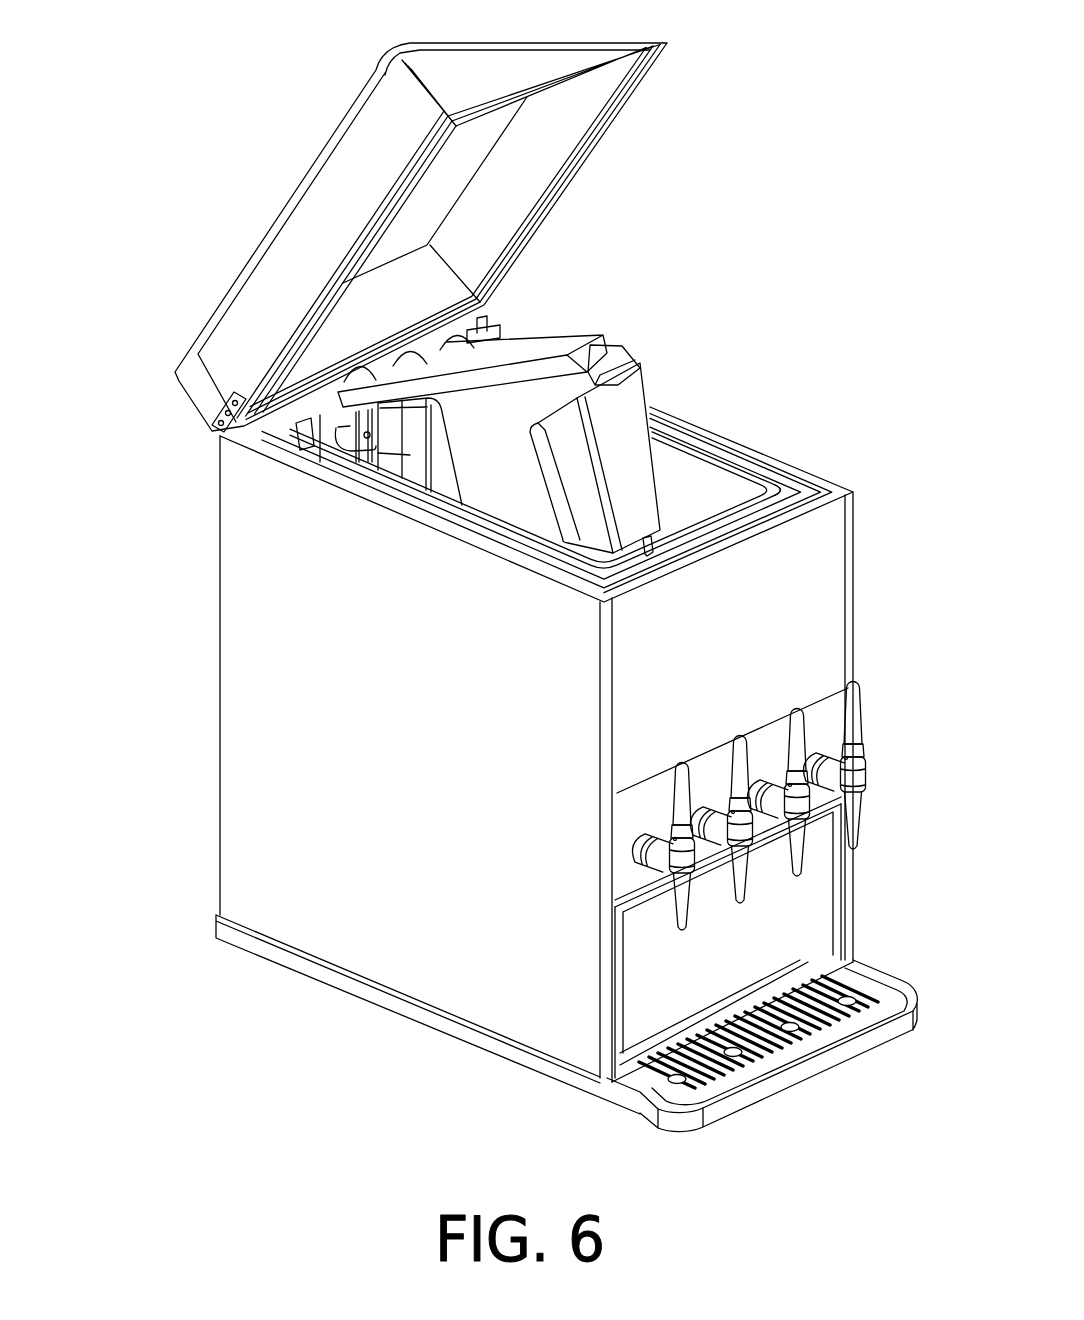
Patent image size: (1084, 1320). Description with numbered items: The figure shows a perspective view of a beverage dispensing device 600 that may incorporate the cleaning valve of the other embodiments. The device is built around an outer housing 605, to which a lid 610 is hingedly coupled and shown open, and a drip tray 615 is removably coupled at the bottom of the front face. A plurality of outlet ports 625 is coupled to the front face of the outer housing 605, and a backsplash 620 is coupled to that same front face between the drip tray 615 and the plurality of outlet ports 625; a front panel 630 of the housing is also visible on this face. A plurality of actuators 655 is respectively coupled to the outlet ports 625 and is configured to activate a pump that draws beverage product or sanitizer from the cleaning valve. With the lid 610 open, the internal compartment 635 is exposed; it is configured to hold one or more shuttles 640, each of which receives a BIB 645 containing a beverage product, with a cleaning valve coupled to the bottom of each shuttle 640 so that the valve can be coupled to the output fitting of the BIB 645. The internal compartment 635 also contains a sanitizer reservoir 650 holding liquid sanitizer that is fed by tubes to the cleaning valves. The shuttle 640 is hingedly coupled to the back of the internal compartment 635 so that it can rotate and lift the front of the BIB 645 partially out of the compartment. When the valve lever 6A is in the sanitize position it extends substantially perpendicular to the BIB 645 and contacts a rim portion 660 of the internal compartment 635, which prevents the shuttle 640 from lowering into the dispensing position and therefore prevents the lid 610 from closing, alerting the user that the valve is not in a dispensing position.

The beverage dispensing device 600 is at (136, 666).
The outer housing 605 is at (218, 510).
The lid 610 is at (627, 104).
The drip tray 615 is at (837, 1063).
The backsplash 620 is at (847, 904).
The plurality of outlet ports 625 is at (857, 831).
The front panel 630 is at (808, 632).
The internal compartment 635 is at (710, 493).
The shuttle 640 is at (637, 351).
The BIB 645 is at (633, 437).
The sanitizer reservoir 650 is at (310, 415).
The plurality of actuators 655 is at (860, 700).
The rim portion 660 is at (652, 548).
The valve lever 6A is at (772, 484).